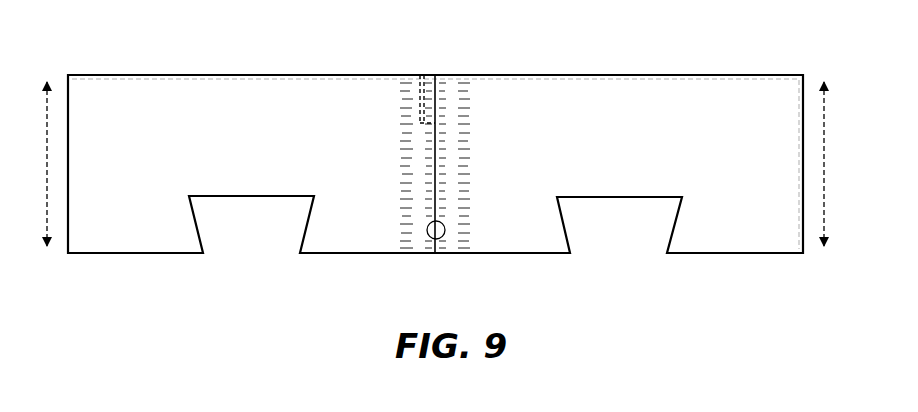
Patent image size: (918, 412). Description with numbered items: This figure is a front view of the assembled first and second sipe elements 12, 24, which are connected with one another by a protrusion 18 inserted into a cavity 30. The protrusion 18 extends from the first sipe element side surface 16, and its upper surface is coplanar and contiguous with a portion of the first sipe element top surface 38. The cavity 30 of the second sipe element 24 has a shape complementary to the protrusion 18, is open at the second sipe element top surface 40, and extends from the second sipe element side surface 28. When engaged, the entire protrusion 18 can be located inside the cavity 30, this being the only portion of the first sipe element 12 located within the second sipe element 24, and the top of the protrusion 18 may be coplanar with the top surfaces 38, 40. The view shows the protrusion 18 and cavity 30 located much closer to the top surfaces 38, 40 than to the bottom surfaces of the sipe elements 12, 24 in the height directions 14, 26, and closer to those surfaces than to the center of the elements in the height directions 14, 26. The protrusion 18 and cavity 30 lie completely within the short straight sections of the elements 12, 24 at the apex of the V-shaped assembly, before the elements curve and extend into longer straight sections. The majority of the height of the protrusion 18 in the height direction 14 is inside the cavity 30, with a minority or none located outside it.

The first sipe element 12 is at (692, 78).
The height direction 14 is at (824, 163).
The first sipe element side surface 16 is at (432, 147).
The protrusion 18 is at (428, 75).
The second sipe element 24 is at (180, 78).
The height direction 26 is at (47, 163).
The second sipe element side surface 28 is at (440, 147).
The cavity 30 is at (418, 100).
The first sipe element top surface 38 is at (612, 68).
The second sipe element top surface 40 is at (258, 70).